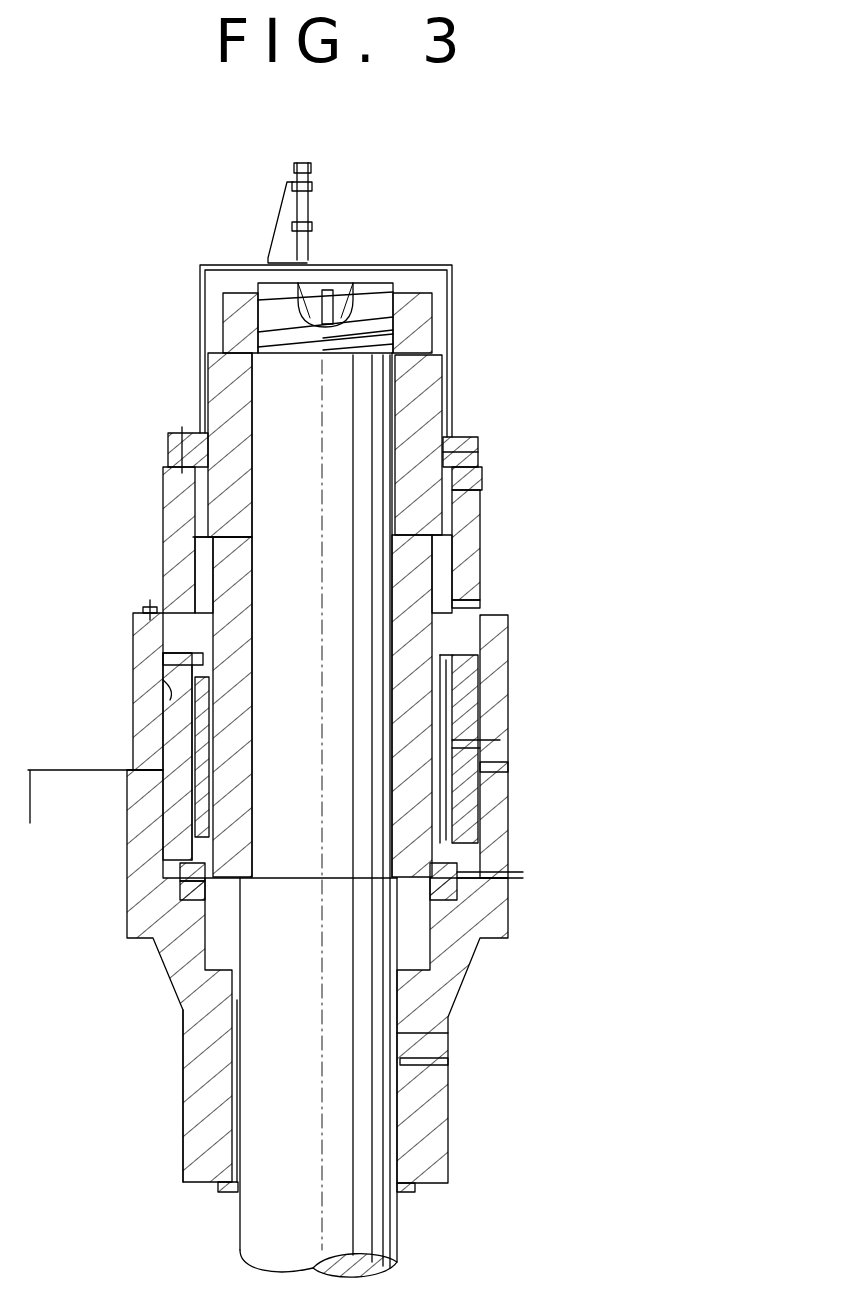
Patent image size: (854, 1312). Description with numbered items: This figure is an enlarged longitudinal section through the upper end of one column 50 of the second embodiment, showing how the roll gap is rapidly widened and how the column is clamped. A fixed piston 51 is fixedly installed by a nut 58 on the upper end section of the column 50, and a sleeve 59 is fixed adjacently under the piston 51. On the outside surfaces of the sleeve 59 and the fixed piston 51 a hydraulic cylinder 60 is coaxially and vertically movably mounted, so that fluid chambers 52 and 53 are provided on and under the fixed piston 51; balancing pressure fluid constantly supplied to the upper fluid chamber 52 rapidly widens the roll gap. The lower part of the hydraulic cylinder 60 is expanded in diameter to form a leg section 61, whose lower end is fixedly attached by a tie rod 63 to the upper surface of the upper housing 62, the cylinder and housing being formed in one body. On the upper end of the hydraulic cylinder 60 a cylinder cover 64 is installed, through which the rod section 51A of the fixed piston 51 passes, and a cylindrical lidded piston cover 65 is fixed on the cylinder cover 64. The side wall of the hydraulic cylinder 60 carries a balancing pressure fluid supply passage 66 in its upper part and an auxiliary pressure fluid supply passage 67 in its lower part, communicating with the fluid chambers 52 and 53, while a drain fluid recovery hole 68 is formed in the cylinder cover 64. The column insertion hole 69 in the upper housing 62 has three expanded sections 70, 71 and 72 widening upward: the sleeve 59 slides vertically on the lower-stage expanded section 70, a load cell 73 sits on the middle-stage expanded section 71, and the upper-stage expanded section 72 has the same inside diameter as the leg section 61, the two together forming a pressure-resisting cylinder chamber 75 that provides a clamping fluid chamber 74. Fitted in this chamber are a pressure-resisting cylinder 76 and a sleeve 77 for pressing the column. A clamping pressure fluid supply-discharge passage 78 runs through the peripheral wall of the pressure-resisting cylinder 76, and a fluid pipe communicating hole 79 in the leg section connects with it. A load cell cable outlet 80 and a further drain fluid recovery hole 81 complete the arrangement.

The column 50 is at (255, 1230).
The fixed piston 51 is at (200, 508).
The rod section 51A is at (425, 373).
The fluid chamber 52 is at (187, 480).
The fluid chamber 53 is at (200, 547).
The nut 58 is at (422, 298).
The sleeve 59 is at (420, 560).
The hydraulic cylinder 60 is at (472, 512).
The leg section 61 is at (138, 708).
The upper housing 62 is at (50, 787).
The tie rod 63 is at (147, 608).
The cylinder cover 64 is at (167, 433).
The piston cover 65 is at (200, 312).
The balancing pressure fluid supply passage 66 is at (482, 482).
The auxiliary pressure fluid supply passage 67 is at (478, 600).
The drain fluid recovery hole 68 is at (478, 452).
The column insertion hole 69 is at (400, 1033).
The lower-stage expanded section 70 is at (205, 957).
The middle-stage expanded section 71 is at (180, 870).
The upper-stage expanded section 72 is at (160, 825).
The load cell 73 is at (185, 893).
The fluid chamber 74 is at (440, 683).
The pressure-resisting cylinder chamber 75 is at (170, 687).
The pressure-resisting cylinder 76 is at (173, 663).
The sleeve 77 is at (183, 750).
The clamping pressure fluid supply-discharge passage 78 is at (460, 745).
The fluid pipe communicating hole 79 is at (503, 752).
The load cell cable outlet 80 is at (483, 880).
The drain fluid recovery hole 81 is at (448, 1060).